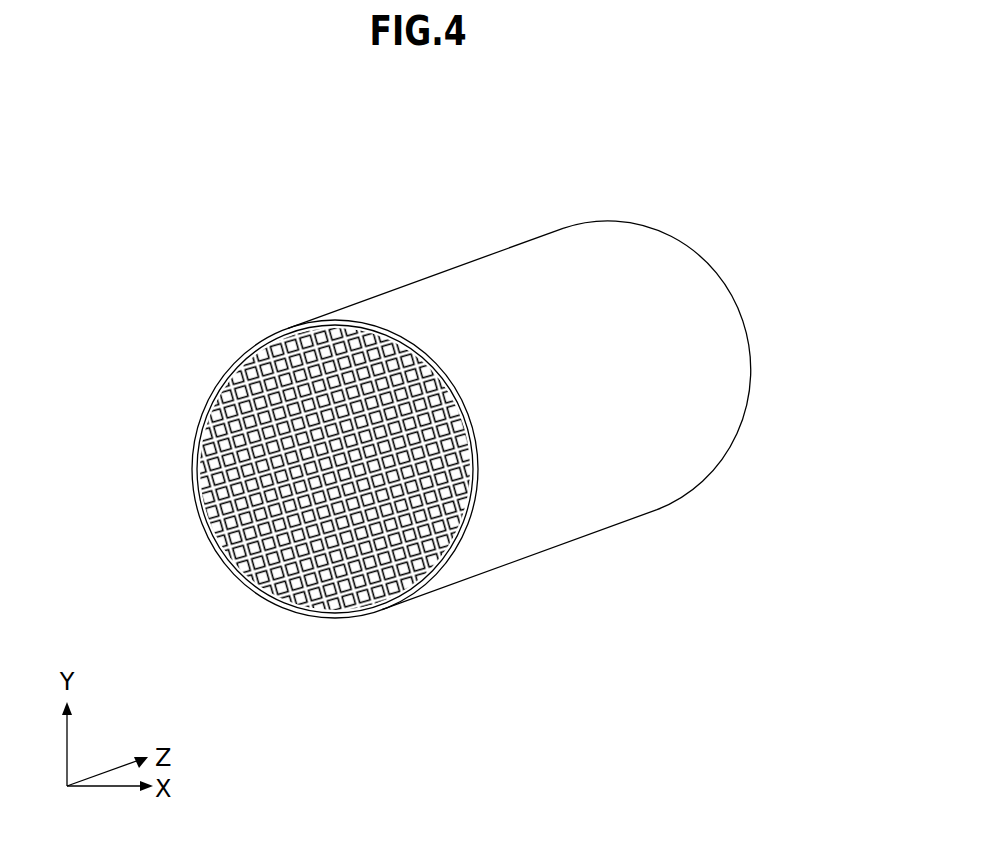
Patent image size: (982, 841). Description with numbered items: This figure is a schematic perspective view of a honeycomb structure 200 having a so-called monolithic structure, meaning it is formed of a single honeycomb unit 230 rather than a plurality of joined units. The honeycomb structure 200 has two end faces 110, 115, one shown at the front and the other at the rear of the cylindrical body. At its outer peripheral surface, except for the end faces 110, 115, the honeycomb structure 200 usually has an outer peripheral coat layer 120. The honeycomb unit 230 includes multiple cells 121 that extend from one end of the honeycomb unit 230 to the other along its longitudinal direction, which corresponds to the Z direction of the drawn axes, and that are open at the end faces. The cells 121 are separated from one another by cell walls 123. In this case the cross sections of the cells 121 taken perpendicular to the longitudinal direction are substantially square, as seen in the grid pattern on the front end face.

The honeycomb structure 200 is at (395, 204).
The end face 110 is at (190, 386).
The end face 115 is at (763, 298).
The outer peripheral coat layer 120 is at (575, 523).
The cells 121 is at (420, 548).
The cell walls 123 is at (317, 546).
The honeycomb unit 230 is at (281, 333).